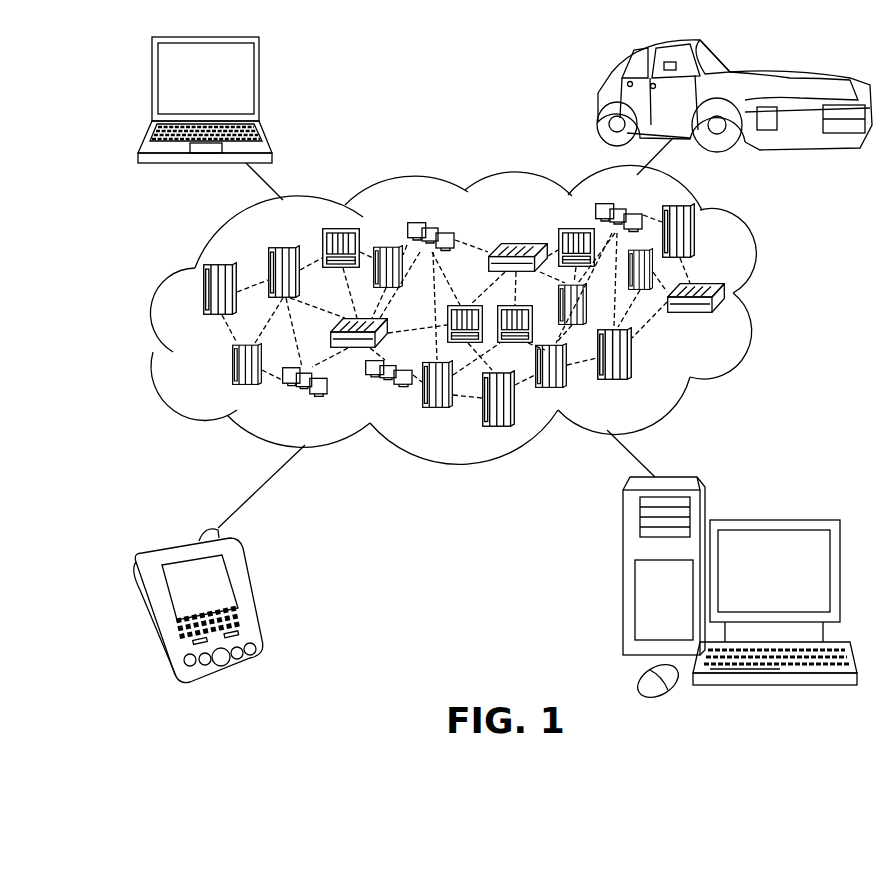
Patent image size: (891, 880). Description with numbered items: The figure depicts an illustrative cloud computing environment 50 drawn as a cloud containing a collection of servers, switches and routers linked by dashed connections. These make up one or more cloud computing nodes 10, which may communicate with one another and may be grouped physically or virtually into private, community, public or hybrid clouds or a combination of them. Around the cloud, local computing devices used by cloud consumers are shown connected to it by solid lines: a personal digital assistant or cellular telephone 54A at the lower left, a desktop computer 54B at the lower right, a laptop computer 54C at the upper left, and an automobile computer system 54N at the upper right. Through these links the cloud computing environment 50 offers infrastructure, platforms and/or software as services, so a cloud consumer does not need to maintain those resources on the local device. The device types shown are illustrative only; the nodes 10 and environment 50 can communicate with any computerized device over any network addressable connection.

The cloud computing nodes 10 is at (725, 321).
The cloud computing environment 50 is at (776, 297).
The personal digital assistant (PDA) or cellular telephone 54A is at (255, 597).
The desktop computer 54B is at (772, 520).
The laptop computer 54C is at (259, 85).
The automobile computer system 54N is at (601, 100).